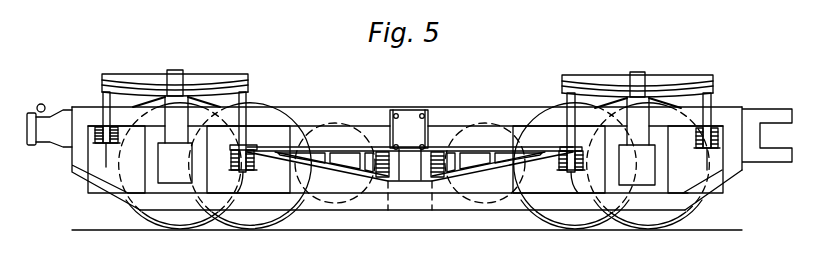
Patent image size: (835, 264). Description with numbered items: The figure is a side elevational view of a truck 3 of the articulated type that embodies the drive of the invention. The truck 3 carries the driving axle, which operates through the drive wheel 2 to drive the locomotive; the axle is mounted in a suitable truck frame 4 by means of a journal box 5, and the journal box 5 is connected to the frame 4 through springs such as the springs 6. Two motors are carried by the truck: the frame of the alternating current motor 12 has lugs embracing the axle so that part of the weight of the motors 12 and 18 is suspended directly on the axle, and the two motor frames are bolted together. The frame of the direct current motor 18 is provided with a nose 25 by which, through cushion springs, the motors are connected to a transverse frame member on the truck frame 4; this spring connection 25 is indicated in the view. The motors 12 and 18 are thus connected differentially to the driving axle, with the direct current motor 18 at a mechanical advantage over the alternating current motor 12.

The drive wheel 2 is at (653, 217).
The truck 3 is at (670, 35).
The truck frame 4 is at (718, 117).
The journal box 5 is at (647, 168).
The springs 6 is at (610, 76).
The alternating current motor 12 is at (557, 112).
The direct current motor 18 is at (470, 130).
The nose 25 is at (432, 148).